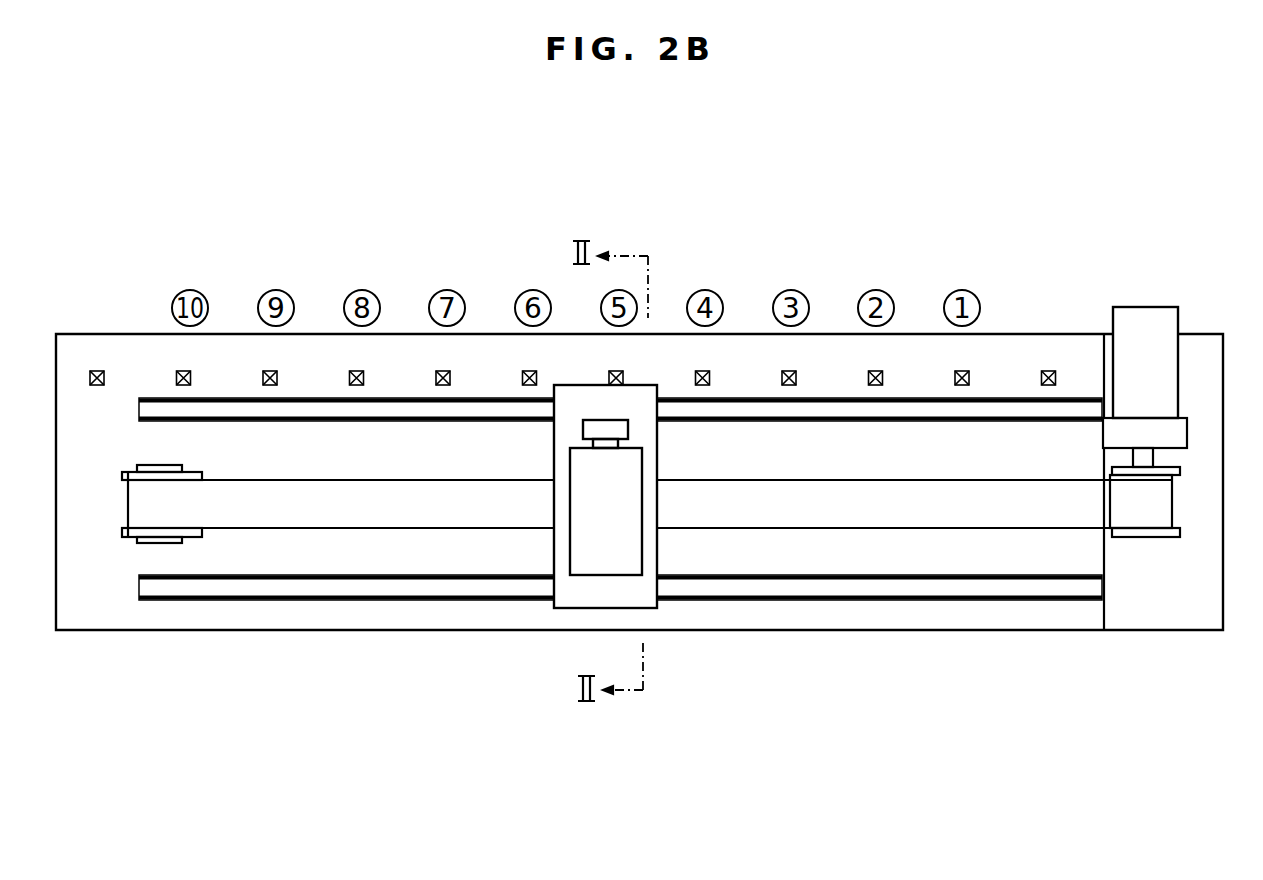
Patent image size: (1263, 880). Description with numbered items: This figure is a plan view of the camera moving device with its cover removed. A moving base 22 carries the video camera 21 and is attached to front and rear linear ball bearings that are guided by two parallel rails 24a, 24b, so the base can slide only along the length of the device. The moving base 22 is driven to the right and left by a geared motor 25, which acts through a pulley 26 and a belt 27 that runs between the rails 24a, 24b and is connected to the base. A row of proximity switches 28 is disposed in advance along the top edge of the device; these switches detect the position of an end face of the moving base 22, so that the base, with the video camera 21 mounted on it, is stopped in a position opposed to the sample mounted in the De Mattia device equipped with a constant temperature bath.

The video camera 21 is at (602, 567).
The moving base 22 is at (646, 600).
The rail 24a is at (890, 601).
The rail 24b is at (825, 400).
The geared motor 25 is at (1168, 323).
The pulley 26 is at (1142, 537).
The belt 27 is at (877, 493).
The proximity switches 28 is at (876, 370).